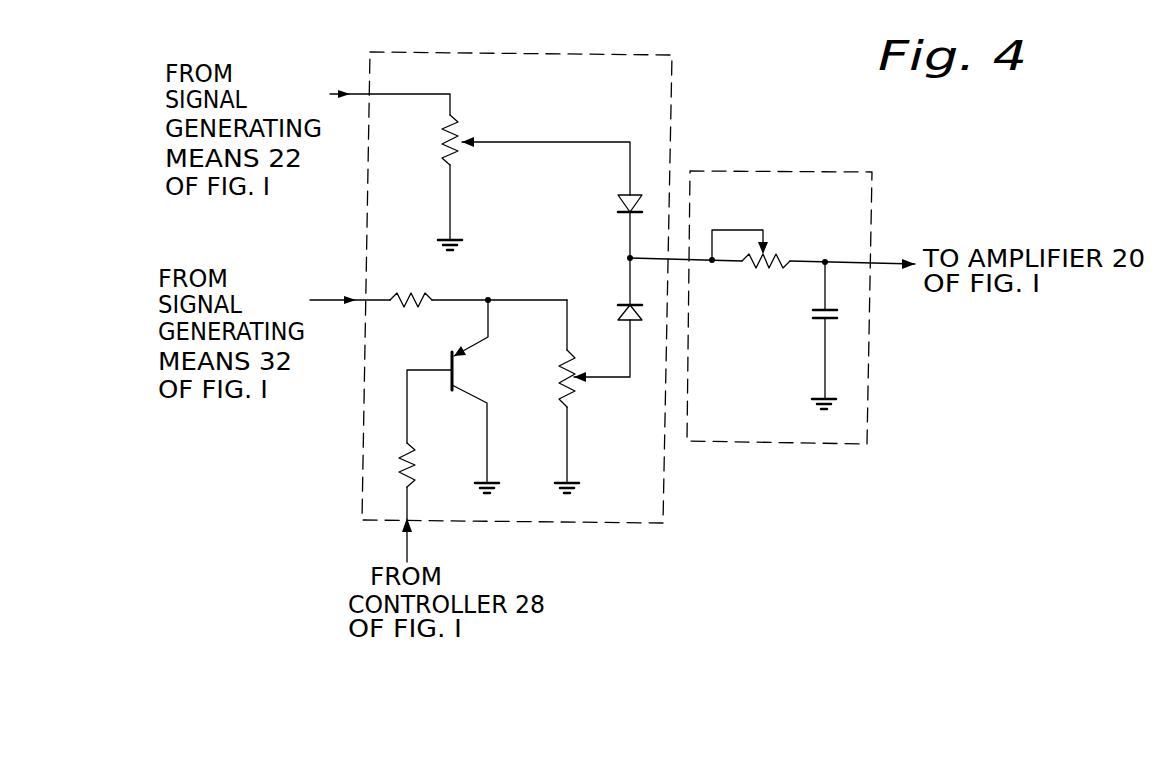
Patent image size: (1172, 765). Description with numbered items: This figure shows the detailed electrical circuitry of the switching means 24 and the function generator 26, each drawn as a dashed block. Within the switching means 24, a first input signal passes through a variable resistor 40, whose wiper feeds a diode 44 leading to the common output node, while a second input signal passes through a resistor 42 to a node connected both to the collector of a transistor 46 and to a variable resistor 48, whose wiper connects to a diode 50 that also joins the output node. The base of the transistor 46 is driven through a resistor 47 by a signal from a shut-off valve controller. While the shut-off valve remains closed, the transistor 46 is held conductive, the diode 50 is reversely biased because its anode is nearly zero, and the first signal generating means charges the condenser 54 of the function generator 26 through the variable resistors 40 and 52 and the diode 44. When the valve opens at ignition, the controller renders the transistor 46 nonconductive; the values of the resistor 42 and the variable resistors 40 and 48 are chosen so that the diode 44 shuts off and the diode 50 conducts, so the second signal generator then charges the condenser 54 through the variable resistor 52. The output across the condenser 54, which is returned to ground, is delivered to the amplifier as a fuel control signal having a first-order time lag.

The switching means 24 is at (588, 54).
The function generator 26 is at (800, 170).
The variable resistor 40 is at (458, 124).
The resistor 42 is at (415, 292).
The diode 44 is at (617, 201).
The transistor 46 is at (458, 392).
The resistor 47 is at (409, 465).
The variable resistor 48 is at (557, 378).
The diode 50 is at (614, 311).
The variable resistor 52 is at (750, 272).
The condenser 54 is at (811, 313).